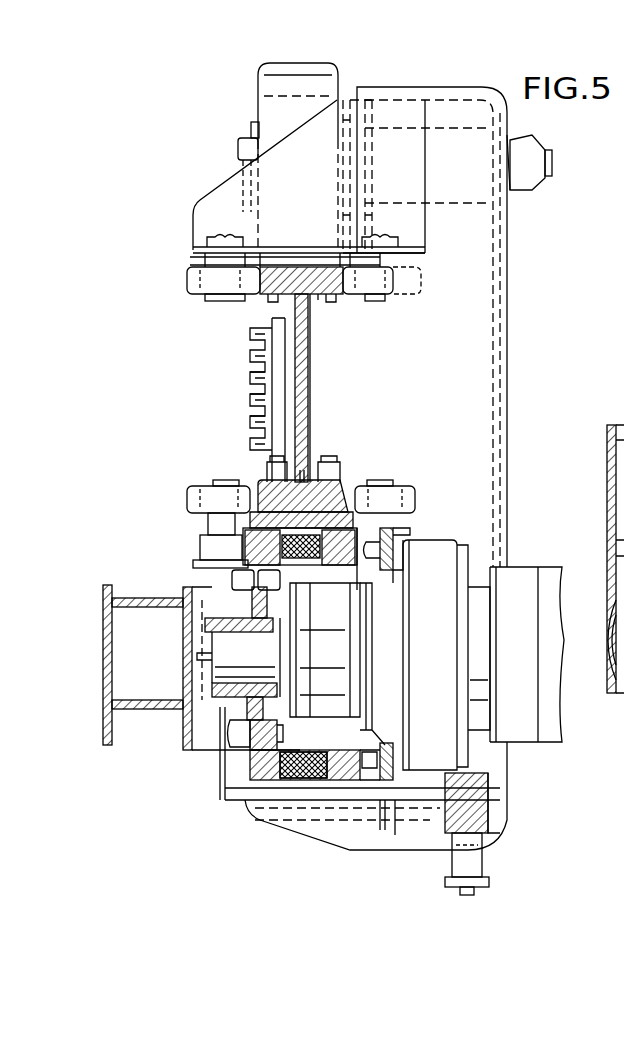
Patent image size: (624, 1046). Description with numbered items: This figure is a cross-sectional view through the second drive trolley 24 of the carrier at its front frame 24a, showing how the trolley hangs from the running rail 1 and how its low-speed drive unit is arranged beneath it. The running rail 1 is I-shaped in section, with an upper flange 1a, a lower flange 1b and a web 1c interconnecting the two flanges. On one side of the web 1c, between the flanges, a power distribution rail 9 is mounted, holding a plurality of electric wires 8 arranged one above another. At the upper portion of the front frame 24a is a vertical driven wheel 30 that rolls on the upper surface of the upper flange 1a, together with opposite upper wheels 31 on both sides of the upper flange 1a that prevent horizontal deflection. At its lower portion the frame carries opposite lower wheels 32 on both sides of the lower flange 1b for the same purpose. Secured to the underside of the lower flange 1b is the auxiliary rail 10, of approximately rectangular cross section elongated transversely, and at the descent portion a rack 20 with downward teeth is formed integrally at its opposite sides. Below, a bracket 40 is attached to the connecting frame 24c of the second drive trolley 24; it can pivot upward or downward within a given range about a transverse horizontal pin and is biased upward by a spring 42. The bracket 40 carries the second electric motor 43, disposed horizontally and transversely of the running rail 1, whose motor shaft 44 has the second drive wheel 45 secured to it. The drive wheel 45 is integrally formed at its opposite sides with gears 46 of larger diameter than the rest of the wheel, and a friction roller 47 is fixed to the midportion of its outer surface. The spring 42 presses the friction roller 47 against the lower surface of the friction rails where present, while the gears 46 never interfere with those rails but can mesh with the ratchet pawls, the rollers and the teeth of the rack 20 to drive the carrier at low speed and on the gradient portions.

The vertical driven wheel 30 is at (280, 100).
The front frame 24a is at (512, 258).
The upper wheels 31 is at (205, 295).
The upper flange 1a is at (262, 296).
The running rail 1 is at (309, 356).
The web 1c is at (309, 396).
The power distribution rail 9 is at (252, 362).
The electric wires 8 is at (250, 408).
The lower flange 1b is at (262, 490).
The lower wheels 32 is at (196, 487).
The auxiliary rail 10 is at (240, 521).
The rack 20 is at (343, 515).
The friction roller 47 is at (311, 560).
The connecting frame 24c is at (118, 734).
The motor shaft 44 is at (245, 612).
The second drive wheel 45 is at (225, 760).
The gears 46 is at (232, 788).
The bracket 40 is at (416, 775).
The second electric motor 43 is at (557, 742).
The spring 42 is at (510, 816).
The second drive trolley 24 is at (608, 424).